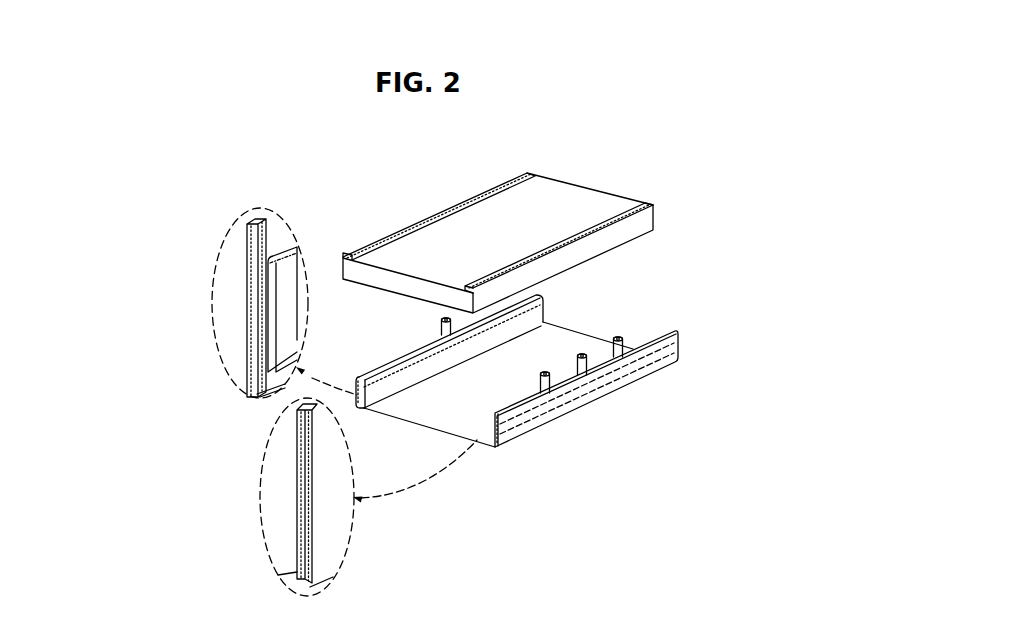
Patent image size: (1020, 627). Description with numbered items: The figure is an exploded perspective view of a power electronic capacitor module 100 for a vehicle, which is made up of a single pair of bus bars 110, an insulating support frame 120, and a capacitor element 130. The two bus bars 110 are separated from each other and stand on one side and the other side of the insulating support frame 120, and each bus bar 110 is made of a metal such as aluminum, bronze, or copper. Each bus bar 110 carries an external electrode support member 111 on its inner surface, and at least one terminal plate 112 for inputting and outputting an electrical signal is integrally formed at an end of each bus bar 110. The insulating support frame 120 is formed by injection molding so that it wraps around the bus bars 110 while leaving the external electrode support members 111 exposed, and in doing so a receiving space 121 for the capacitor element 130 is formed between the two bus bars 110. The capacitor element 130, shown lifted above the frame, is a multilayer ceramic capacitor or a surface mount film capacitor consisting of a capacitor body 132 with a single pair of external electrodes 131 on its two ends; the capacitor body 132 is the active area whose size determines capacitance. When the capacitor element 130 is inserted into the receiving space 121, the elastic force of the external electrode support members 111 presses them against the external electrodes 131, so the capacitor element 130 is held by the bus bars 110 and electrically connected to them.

The power electronic capacitor module 100 is at (380, 207).
The bus bar 110 is at (252, 303).
The external electrode support member 111 is at (430, 363).
The terminal plate 112 is at (442, 333).
The insulating support frame 120 is at (420, 417).
The receiving space 121 is at (505, 381).
The capacitor element 130 is at (501, 216).
The external electrode 131 is at (510, 174).
The capacitor body 132 is at (558, 202).